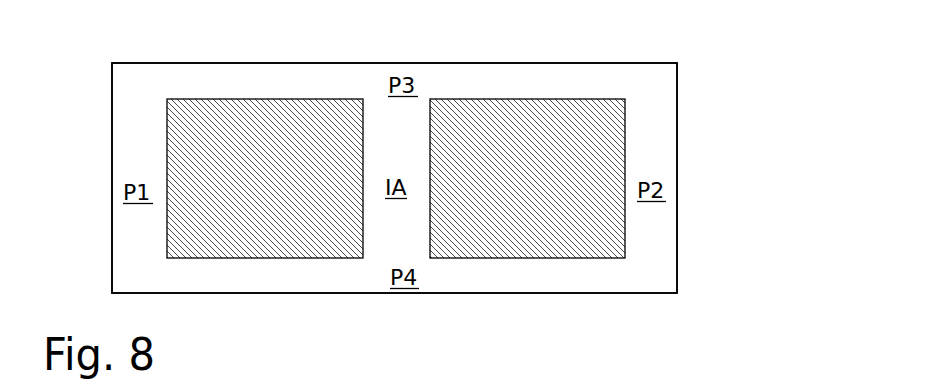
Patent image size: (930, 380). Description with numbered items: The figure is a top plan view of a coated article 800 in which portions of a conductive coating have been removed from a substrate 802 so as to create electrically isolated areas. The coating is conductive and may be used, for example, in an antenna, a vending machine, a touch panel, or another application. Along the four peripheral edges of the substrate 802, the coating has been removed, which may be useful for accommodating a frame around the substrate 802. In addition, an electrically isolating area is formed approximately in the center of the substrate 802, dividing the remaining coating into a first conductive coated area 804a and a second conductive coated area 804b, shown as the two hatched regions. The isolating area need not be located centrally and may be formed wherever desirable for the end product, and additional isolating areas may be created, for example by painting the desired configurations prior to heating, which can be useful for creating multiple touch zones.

The coated article 800 is at (700, 63).
The substrate 802 is at (678, 177).
The first conductive coated area 804a is at (574, 117).
The second conductive coated area 804b is at (288, 131).